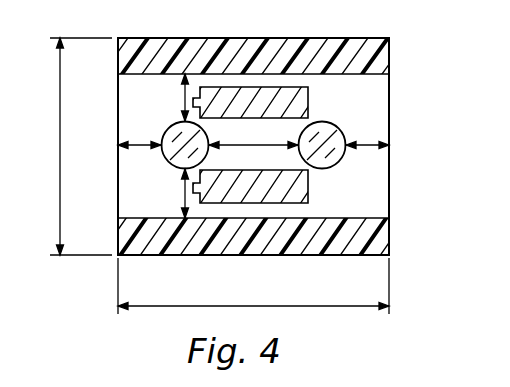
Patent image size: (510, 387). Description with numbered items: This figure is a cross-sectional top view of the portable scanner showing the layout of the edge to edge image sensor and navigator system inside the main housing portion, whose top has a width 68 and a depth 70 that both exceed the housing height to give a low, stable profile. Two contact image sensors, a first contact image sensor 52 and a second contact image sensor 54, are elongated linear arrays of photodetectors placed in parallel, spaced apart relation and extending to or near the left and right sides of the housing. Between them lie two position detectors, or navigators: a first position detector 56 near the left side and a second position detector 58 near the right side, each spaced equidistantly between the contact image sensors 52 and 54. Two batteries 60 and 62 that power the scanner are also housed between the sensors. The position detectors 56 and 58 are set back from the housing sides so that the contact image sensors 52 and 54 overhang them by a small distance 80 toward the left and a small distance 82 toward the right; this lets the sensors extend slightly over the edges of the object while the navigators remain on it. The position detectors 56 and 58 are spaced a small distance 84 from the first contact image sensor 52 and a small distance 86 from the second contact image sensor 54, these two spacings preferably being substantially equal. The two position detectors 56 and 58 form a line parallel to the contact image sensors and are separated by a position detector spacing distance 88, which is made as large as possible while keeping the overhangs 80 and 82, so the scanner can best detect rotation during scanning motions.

The first contact image sensor 52 is at (390, 57).
The second contact image sensor 54 is at (384, 223).
The first position detector 56 is at (160, 170).
The second position detector 58 is at (345, 170).
The battery 60 is at (308, 107).
The battery 62 is at (278, 198).
The width 68 is at (255, 306).
The depth 70 is at (62, 148).
The distance 80 is at (138, 143).
The distance 82 is at (368, 140).
The distance 84 is at (182, 100).
The distance 86 is at (183, 198).
The position detector spacing distance 88 is at (252, 143).